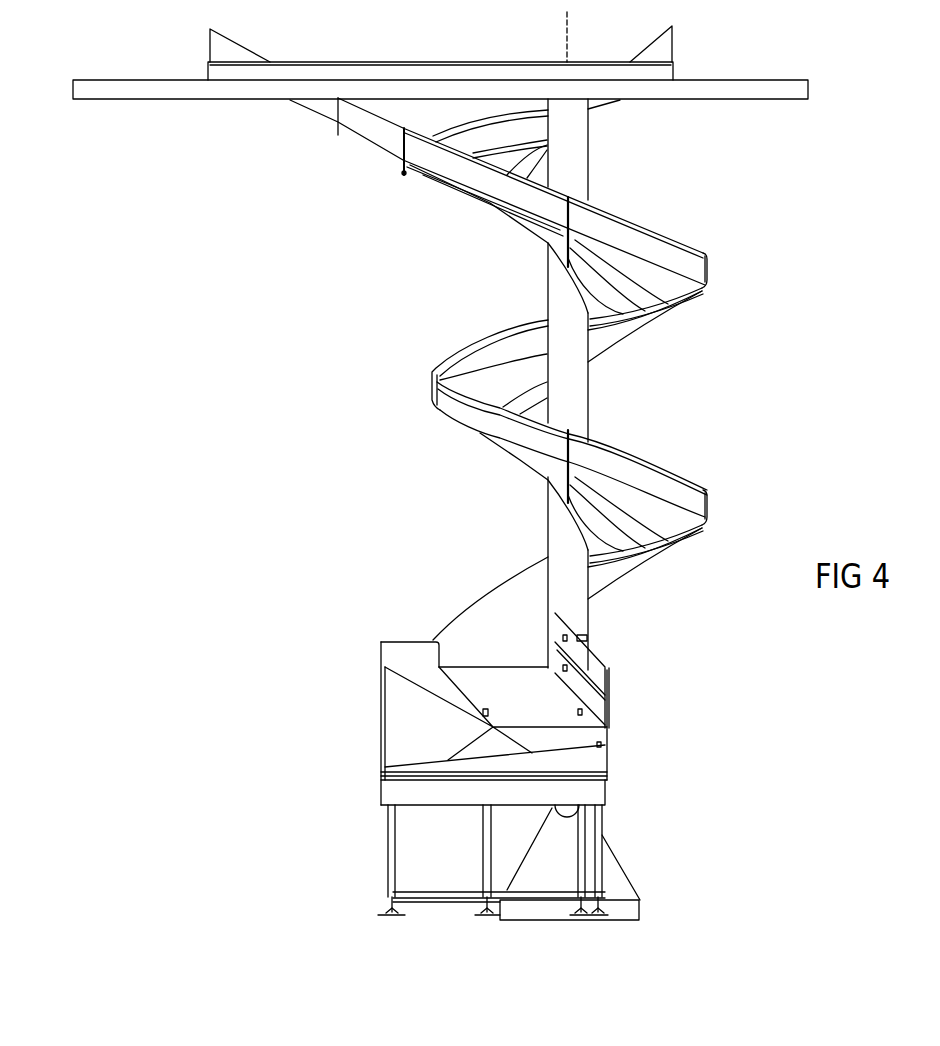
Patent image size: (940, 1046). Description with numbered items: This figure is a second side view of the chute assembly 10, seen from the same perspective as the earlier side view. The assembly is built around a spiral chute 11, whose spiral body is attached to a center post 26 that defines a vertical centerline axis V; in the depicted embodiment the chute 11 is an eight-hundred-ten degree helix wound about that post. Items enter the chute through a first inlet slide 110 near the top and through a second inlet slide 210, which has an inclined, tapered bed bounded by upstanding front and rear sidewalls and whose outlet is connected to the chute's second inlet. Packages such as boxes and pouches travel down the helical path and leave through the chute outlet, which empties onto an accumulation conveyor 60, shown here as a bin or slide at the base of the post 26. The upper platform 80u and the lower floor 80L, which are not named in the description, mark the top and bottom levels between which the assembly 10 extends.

The chute assembly 10 is at (936, 190).
The spiral chute 11 is at (433, 366).
The center post 26 is at (570, 392).
The accumulation conveyor 60 is at (417, 719).
The upper platform deck 80u is at (768, 87).
The lower floor surface 80L is at (637, 922).
The first inlet slide 110 is at (598, 112).
The second inlet slide 210 is at (322, 107).